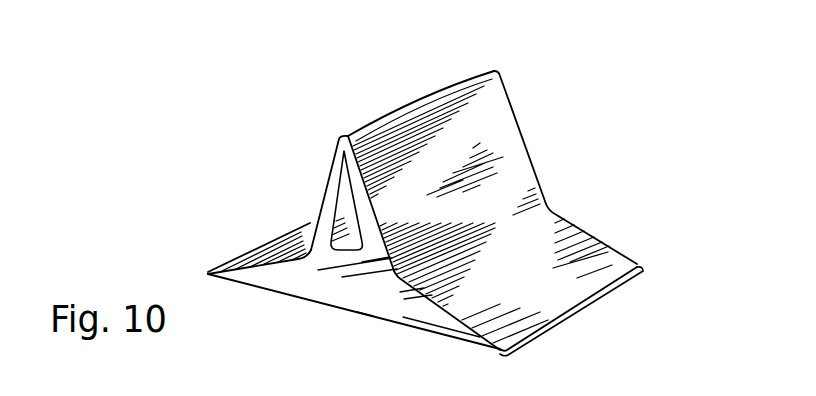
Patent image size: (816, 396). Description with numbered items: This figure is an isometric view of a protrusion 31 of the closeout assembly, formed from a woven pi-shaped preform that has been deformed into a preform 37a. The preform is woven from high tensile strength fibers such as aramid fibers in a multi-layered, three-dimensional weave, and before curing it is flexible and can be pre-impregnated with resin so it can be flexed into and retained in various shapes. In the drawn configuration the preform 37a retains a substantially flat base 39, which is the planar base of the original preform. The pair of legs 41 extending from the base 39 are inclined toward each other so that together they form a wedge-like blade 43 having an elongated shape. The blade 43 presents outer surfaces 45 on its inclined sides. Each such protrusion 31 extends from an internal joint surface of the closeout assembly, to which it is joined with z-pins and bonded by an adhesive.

The protrusion 31 is at (233, 250).
The preform 37a is at (597, 172).
The base 39 is at (512, 287).
The legs 41 is at (370, 218).
The wedge-like blade 43 is at (510, 76).
The outer surfaces 45 is at (512, 174).